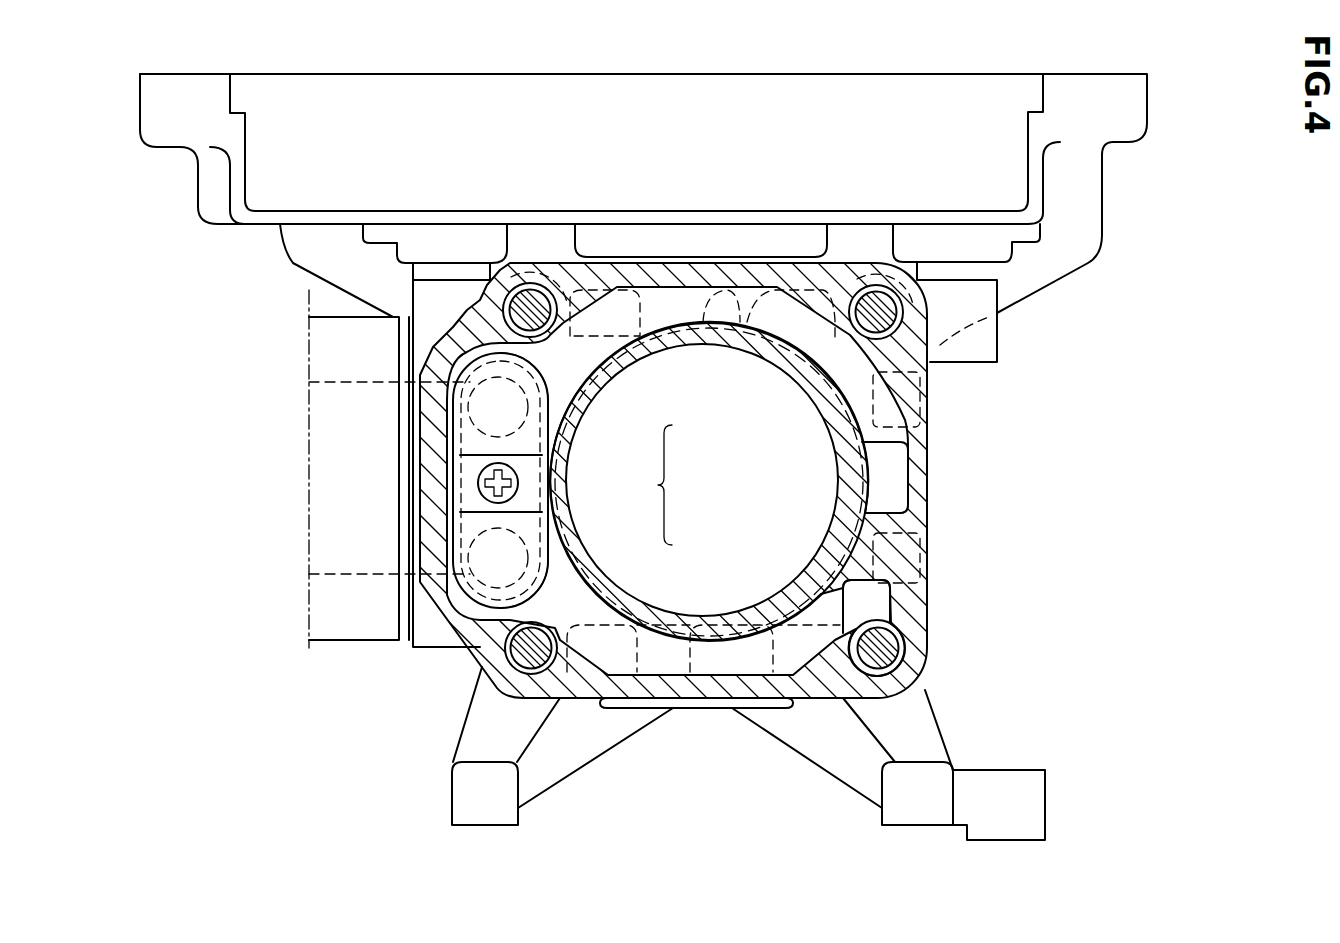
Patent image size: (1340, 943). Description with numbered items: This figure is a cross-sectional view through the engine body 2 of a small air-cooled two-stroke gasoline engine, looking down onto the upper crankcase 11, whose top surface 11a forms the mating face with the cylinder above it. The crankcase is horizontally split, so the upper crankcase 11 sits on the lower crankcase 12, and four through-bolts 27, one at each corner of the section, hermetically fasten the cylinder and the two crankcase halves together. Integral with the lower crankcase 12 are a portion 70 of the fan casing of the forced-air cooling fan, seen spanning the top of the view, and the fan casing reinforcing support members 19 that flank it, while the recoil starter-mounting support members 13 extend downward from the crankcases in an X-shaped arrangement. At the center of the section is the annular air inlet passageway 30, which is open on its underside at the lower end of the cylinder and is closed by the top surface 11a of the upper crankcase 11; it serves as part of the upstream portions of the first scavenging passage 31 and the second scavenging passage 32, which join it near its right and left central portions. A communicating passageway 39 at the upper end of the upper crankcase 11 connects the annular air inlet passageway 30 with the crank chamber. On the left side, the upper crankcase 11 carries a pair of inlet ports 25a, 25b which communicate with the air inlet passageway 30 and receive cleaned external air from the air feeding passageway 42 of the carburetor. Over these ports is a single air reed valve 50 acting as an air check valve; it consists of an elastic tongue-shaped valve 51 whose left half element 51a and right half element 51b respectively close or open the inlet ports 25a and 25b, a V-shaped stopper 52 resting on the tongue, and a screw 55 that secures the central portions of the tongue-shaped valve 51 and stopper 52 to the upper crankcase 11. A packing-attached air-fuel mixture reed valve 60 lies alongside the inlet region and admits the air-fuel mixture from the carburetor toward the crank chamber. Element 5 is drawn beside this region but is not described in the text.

The engine body 2 is at (357, 765).
The intake member 5 is at (361, 623).
The upper crankcase 11 is at (703, 257).
The top surface of the upper crankcase 11a is at (777, 305).
The lower crankcase 12 is at (313, 277).
The recoil starter-mounting support members 13 is at (463, 796).
The fan casing reinforcing support members 19 is at (300, 243).
The inlet port 25a is at (450, 412).
The inlet port 25b is at (457, 557).
The through-bolts 27 is at (530, 284).
The annular air inlet passageway 30 is at (845, 584).
The first scavenging passage 31 is at (652, 300).
The second scavenging passage 32 is at (740, 295).
The communicating passageway 39 is at (908, 512).
The air feeding passageway 42 is at (338, 574).
The air reed valve 50 is at (473, 445).
The elastic tongue-shaped valve 51 is at (681, 485).
The left half element 51a is at (552, 418).
The right half element 51b is at (543, 560).
The V-shaped stopper 52 is at (462, 525).
The screw 55 is at (478, 480).
The packing-attached air-fuel mixture reed valve 60 is at (406, 640).
The portion of the fan casing 70 is at (195, 195).